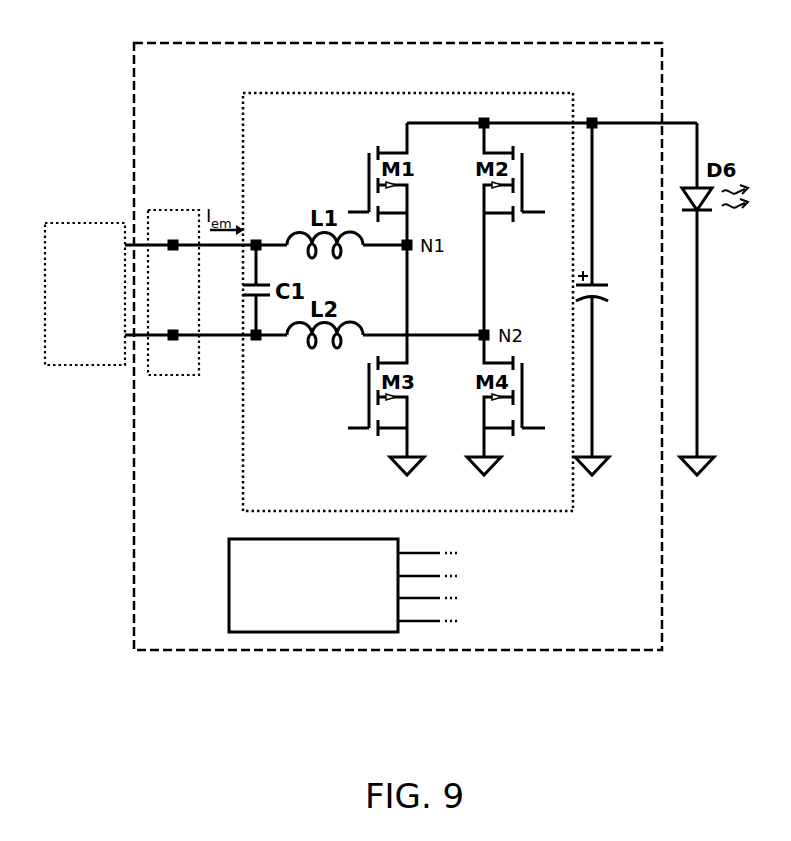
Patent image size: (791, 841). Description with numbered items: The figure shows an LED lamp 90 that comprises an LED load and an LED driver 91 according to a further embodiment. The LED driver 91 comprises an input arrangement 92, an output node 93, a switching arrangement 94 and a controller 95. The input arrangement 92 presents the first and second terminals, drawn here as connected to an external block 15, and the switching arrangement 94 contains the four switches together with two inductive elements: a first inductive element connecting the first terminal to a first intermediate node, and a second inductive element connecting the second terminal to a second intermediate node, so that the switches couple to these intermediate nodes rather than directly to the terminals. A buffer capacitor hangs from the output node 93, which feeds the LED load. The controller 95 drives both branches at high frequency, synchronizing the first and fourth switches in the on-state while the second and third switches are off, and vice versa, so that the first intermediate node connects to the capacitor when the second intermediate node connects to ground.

The LED lamp 90 is at (106, 663).
The LED driver 91 is at (397, 43).
The input arrangement 92 is at (178, 211).
The output node 93 is at (592, 123).
The switching arrangement 94 is at (243, 462).
The controller 95 is at (360, 585).
The power supply / AC source 15 is at (85, 294).